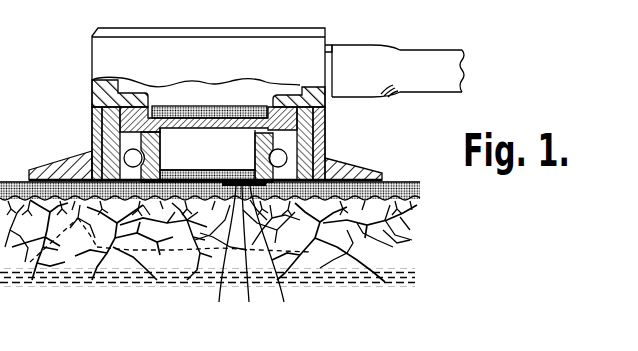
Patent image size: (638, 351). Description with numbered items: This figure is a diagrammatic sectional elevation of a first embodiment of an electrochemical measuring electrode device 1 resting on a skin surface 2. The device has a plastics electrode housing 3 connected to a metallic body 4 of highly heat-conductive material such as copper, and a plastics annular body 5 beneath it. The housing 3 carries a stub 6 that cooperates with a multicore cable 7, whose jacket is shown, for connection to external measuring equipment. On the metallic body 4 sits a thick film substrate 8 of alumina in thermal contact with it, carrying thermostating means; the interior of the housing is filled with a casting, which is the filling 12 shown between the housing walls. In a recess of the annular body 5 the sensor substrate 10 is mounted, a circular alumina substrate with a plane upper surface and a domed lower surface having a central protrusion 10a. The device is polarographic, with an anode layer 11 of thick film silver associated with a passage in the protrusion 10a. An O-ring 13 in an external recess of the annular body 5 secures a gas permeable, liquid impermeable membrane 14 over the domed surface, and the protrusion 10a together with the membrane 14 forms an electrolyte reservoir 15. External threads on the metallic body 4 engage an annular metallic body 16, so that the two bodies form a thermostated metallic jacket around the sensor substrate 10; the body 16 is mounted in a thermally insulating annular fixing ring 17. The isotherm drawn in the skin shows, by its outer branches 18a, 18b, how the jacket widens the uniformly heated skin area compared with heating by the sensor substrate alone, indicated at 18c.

The measuring electrode device 1 is at (88, 39).
The skin surface 2 is at (382, 287).
The electrode housing 3 is at (92, 88).
The metallic body 4 is at (325, 122).
The annular body 5 is at (325, 145).
The stub 6 is at (329, 48).
The multicore cable 7 is at (373, 45).
The thick film substrate 8 is at (192, 105).
The sensor substrate 10 is at (182, 169).
The central protrusion 10a is at (213, 170).
The anode layer 11 is at (255, 259).
The filling 12 is at (228, 106).
The O-ring 13 is at (101, 142).
The membrane 14 is at (276, 259).
The electrolyte reservoir 15 is at (237, 256).
The annular metallic body 16 is at (92, 123).
The annular fixing ring 17 is at (382, 172).
The isotherm curve outer branch 18a is at (97, 247).
The isotherm curve outer branch 18b is at (310, 252).
The isotherm curve central portion 18c is at (172, 250).